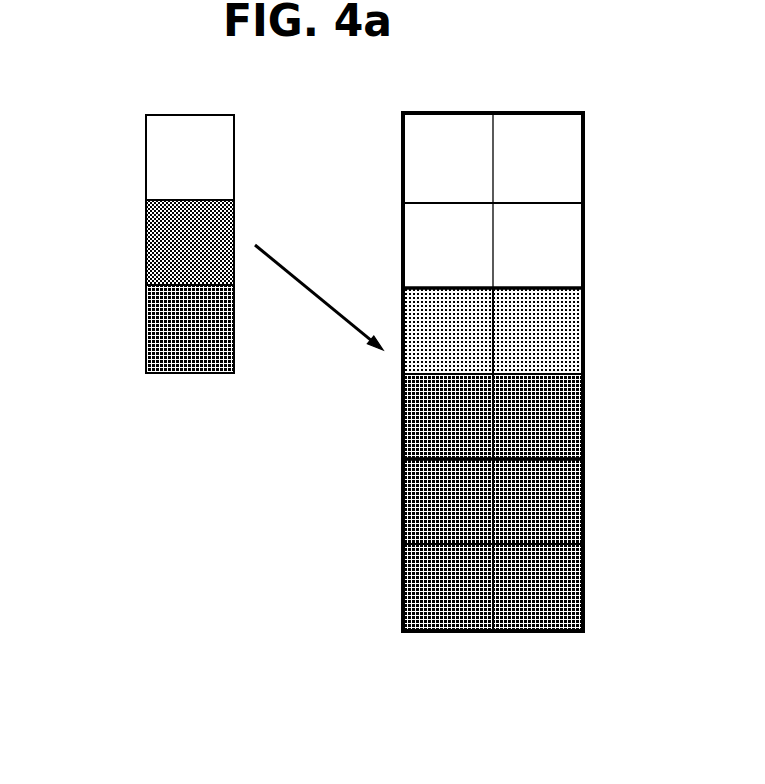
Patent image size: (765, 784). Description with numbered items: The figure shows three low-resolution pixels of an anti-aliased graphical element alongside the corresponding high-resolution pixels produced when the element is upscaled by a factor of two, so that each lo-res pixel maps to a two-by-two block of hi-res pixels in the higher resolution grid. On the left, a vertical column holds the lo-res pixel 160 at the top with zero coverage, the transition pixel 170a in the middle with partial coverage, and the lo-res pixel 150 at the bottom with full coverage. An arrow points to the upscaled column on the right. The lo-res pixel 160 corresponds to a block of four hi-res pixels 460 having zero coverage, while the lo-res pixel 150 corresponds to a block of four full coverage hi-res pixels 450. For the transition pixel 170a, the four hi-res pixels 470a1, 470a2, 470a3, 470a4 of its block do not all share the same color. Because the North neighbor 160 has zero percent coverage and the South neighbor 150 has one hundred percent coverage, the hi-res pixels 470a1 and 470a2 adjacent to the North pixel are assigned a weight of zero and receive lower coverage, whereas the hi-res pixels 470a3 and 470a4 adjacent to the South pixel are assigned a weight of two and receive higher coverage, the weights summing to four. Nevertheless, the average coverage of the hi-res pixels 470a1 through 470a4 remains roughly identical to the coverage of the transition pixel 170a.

The lo-res pixel 150 is at (146, 328).
The lo-res pixel 160 is at (146, 150).
The transition pixel 170a is at (146, 236).
The full coverage hi-res pixels 450 is at (568, 595).
The hi-res pixels having zero coverage 460 is at (568, 170).
The hi-res pixel 470a1 is at (580, 315).
The hi-res pixel 470a2 is at (403, 309).
The hi-res pixel 470a3 is at (580, 425).
The hi-res pixel 470a4 is at (405, 433).